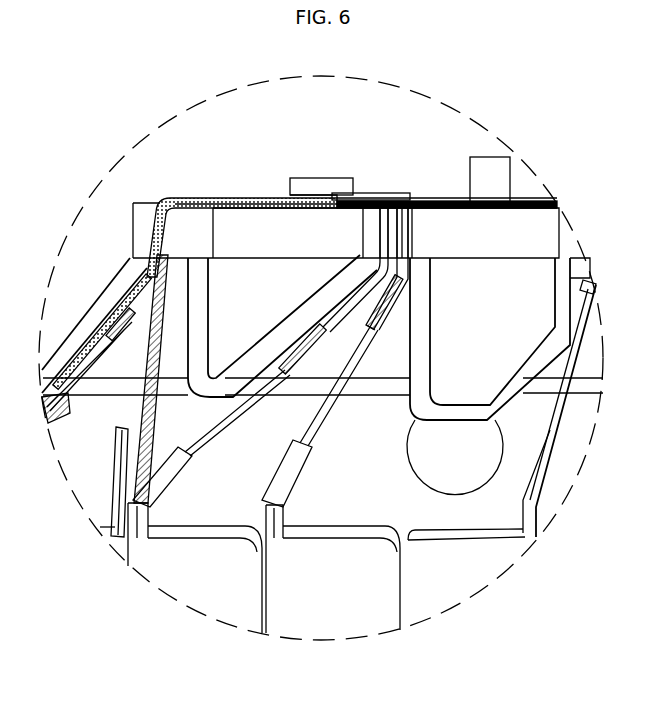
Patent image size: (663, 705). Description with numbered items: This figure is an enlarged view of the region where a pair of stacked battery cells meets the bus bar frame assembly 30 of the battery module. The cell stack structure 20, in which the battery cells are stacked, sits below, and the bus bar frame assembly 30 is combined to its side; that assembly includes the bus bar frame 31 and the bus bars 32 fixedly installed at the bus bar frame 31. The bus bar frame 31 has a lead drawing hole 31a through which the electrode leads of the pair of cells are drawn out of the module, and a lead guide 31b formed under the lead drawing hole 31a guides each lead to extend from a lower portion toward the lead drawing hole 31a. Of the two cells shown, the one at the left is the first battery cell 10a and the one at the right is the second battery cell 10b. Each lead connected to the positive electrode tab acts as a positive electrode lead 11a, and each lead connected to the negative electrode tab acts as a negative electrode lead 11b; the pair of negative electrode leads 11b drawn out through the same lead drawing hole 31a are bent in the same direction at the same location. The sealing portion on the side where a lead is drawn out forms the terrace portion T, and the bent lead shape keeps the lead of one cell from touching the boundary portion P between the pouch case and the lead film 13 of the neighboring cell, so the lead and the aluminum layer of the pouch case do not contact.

The bus bar frame assembly 30 is at (72, 267).
The bus bar frame 31 is at (152, 200).
The lead drawing hole 31a is at (378, 230).
The lead guide 31b is at (203, 326).
The bus bar 32 is at (543, 230).
The positive electrode lead 11a is at (155, 216).
The negative electrode lead 11b is at (335, 288).
The lead film 13 is at (313, 329).
The terrace portion T is at (297, 428).
The boundary portion P is at (380, 337).
The cell stack structure 20 is at (302, 555).
The first battery cell 10a is at (224, 608).
The second battery cell 10b is at (304, 638).